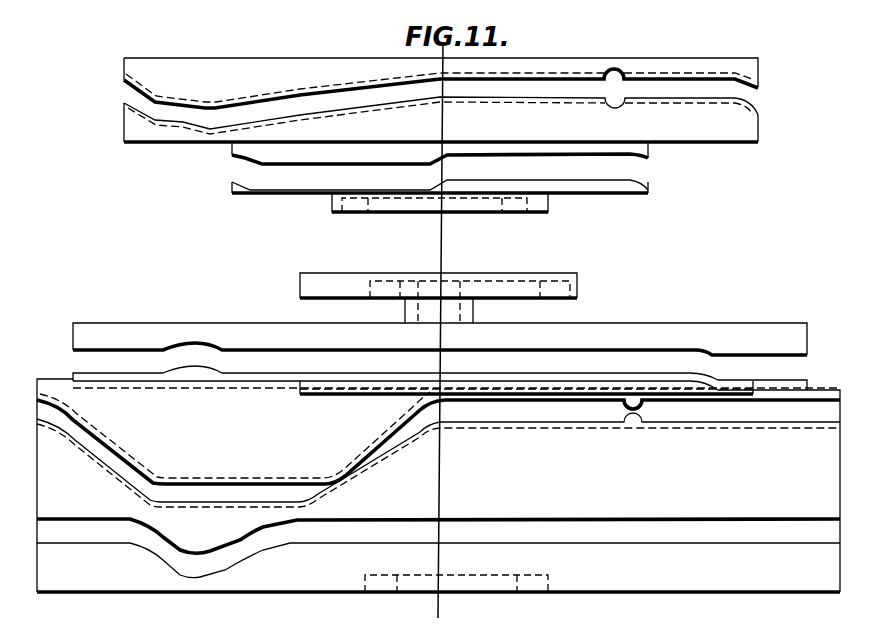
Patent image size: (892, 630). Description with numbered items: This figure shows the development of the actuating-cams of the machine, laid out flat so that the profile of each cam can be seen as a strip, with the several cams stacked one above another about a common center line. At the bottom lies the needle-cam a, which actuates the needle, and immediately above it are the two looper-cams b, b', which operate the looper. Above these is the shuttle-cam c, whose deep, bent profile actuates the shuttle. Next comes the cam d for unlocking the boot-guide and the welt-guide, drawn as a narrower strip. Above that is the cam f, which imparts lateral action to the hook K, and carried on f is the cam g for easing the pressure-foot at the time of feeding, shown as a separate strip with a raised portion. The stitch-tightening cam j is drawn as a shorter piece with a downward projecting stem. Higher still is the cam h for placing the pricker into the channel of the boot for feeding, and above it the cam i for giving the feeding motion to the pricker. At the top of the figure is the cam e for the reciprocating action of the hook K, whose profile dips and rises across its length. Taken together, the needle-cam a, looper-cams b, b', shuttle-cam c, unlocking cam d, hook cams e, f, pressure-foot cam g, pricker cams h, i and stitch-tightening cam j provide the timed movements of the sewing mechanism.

The cam for the reciprocating action of the hook e is at (441, 100).
The cam for giving the feeding motion to the pricker i is at (440, 167).
The cam for placing the pricker into the channel of the boot h is at (483, 205).
The stitch-tightening cam j is at (438, 296).
The cam for easing the pressure-foot g is at (440, 339).
The cam for imparting lateral action to the hook f is at (440, 370).
The cam for unlocking the boot-guide and the welt-guide d is at (657, 390).
The shuttle-cam c is at (438, 449).
The looper-cam b' is at (438, 548).
The needle-cam a is at (456, 585).
The looper-cam b is at (438, 559).